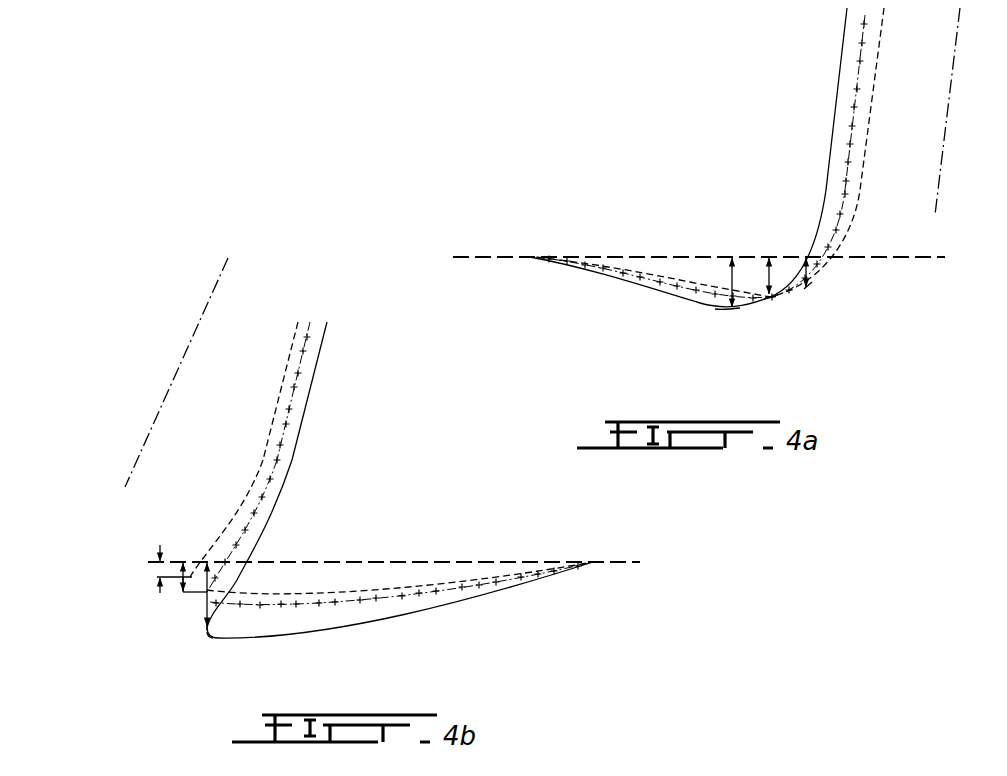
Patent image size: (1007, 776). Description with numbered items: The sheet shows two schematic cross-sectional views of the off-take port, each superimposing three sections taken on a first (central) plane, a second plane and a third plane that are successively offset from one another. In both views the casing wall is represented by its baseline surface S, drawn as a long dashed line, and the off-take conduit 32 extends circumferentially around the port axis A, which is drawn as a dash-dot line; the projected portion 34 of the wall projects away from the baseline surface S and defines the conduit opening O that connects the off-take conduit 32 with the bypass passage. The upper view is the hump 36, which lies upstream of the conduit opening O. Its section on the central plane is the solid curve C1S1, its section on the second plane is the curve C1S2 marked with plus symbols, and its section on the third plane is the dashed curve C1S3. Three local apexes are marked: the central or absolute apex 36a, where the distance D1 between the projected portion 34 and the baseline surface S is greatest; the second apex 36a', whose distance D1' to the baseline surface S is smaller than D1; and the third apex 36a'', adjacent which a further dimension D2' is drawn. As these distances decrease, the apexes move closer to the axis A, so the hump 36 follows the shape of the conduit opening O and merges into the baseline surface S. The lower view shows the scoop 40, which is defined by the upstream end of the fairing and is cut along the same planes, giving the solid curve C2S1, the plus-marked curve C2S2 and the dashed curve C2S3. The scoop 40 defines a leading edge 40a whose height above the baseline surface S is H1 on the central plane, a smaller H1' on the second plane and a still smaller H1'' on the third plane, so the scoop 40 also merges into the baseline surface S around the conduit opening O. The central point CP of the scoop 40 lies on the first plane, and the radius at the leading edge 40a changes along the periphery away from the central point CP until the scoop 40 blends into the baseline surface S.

In FIG. 4B, the off-take conduit 32 is at (302, 427).
In FIG. 4B, the projected portion 34 is at (353, 534).
In FIG. 4A, the hump 36 is at (720, 196).
In FIG. 4A, the central apex 36a is at (729, 343).
In FIG. 4A, the second apex 36a' is at (799, 337).
In FIG. 4A, the third apex 36a'' is at (857, 302).
In FIG. 4B, the scoop 40 is at (322, 534).
In FIG. 4B, the leading edge 40a is at (204, 632).
In FIG. 4A, the baseline surface S is at (630, 255).
In FIG. 4B, the baseline surface S is at (352, 560).
In FIG. 4A, the port axis A is at (950, 68).
In FIG. 4B, the port axis A is at (218, 290).
In FIG. 4B, the conduit opening O is at (229, 420).
In FIG. 4B, the central point CP is at (205, 637).
In FIG. 4B, the distance between leading edge and baseline surface on first plane H1 is at (143, 604).
In FIG. 4B, the distance between leading edge and baseline surface on second plane H1' is at (186, 551).
In FIG. 4B, the distance between leading edge and baseline surface on third plane H1'' is at (131, 569).
In FIG. 4A, the distance between hump and baseline surface at central apex D1 is at (694, 299).
In FIG. 4A, the distance between second apex and baseline surface D1' is at (757, 254).
In FIG. 4A, the third depth D2' is at (852, 275).
In FIG. 4A, the hump cross-section curve on first plane C1S1 is at (605, 277).
In FIG. 4A, the hump cross-section curve on second plane C1S2 is at (645, 280).
In FIG. 4A, the hump cross-section curve on third plane C1S3 is at (680, 278).
In FIG. 4B, the scoop and fairing cross-section curve on first plane C2S1 is at (270, 640).
In FIG. 4B, the scoop and fairing cross-section curve on second plane C2S2 is at (343, 608).
In FIG. 4B, the scoop and fairing cross-section curve on third plane C2S3 is at (393, 588).